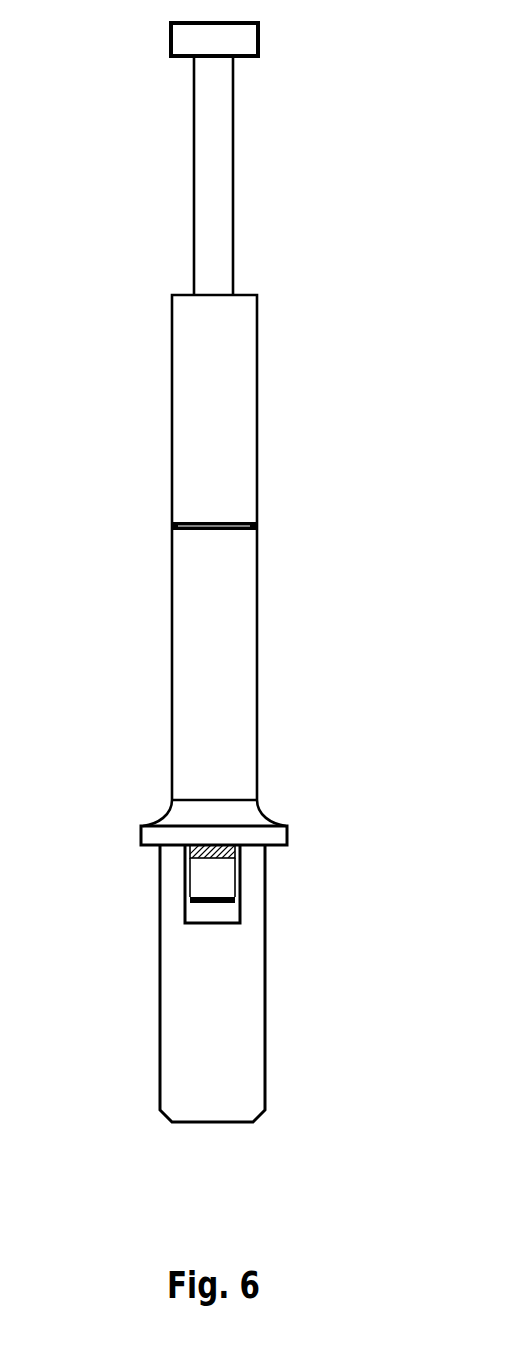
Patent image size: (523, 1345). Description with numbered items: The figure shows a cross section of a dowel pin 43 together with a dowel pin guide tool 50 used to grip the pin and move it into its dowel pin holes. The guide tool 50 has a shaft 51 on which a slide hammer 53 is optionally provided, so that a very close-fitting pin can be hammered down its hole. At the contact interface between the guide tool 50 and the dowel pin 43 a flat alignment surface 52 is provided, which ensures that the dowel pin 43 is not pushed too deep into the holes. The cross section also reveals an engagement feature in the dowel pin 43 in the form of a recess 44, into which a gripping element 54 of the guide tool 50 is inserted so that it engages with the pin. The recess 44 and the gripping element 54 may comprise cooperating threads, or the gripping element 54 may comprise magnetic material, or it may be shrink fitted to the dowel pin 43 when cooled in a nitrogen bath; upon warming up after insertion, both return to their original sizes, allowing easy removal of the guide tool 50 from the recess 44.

The guide tool 50 is at (346, 125).
The shaft 51 is at (194, 166).
The slide hammer 53 is at (172, 360).
The flat alignment surface 52 is at (142, 845).
The gripping element 54 is at (222, 884).
The recess 44 is at (222, 926).
The dowel pin 43 is at (280, 1054).